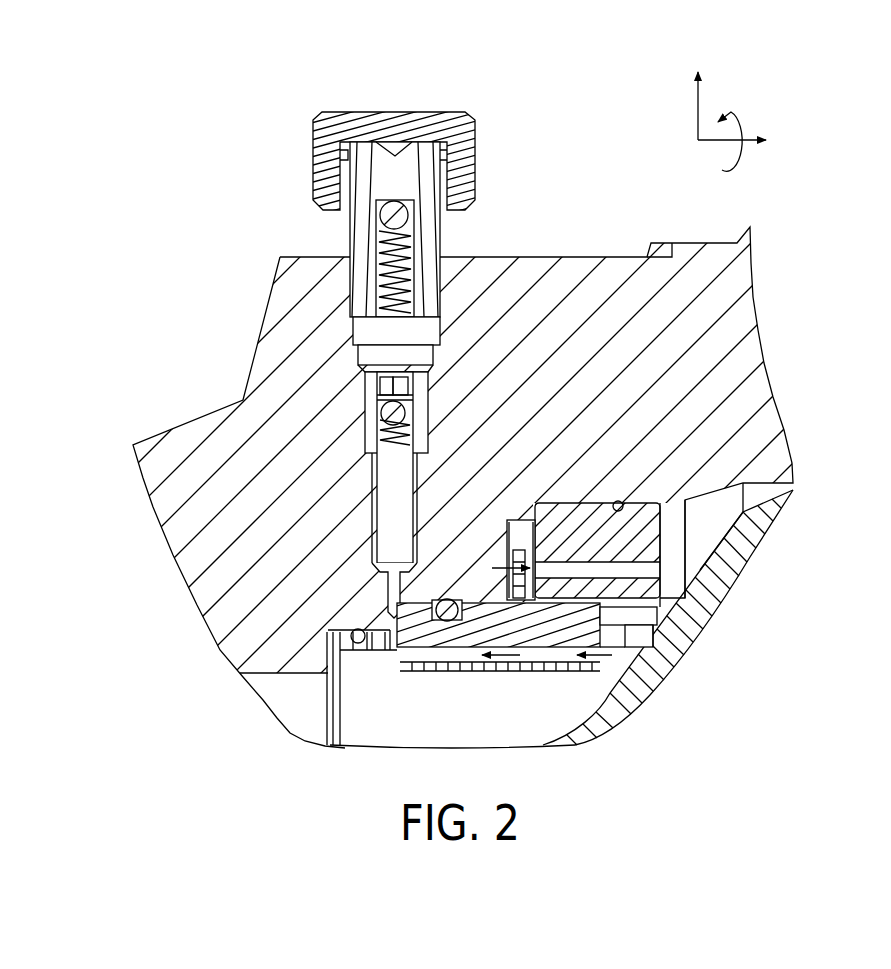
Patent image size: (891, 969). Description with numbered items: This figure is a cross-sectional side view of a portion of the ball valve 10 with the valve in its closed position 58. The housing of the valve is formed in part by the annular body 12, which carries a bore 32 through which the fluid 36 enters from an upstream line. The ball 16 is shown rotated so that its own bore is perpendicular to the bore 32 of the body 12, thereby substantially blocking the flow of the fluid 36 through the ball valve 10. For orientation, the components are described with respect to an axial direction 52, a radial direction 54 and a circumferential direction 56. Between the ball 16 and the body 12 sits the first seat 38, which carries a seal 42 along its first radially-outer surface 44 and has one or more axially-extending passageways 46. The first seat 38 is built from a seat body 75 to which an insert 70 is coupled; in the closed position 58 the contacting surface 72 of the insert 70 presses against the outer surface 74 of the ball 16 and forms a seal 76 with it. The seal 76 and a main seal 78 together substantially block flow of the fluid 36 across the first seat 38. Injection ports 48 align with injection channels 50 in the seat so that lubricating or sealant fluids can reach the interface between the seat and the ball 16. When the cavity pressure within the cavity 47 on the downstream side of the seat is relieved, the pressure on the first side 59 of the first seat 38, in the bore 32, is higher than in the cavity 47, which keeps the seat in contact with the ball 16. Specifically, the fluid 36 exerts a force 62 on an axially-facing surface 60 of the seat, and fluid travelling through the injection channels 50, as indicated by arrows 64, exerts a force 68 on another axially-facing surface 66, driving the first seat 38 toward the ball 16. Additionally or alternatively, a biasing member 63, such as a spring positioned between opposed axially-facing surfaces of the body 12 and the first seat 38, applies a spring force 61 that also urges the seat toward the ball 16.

The ball valve 10 is at (800, 98).
The body 12 is at (570, 272).
The ball 16 is at (757, 538).
The bore 32 is at (300, 675).
The fluid 36 is at (230, 723).
The first seat 38 is at (655, 520).
The seal 42 is at (628, 500).
The first radially-outer surface 44 is at (568, 505).
The passageways 46 is at (623, 567).
The cavity 47 is at (781, 497).
The injection ports 48 is at (382, 120).
The injection channels 50 is at (530, 662).
The axial axis or direction 52 is at (722, 142).
The radial axis or direction 54 is at (698, 112).
The circumferential axis or direction 56 is at (743, 160).
The closed position 58 is at (618, 220).
The first side 59 is at (290, 735).
The axially-facing surface 60 is at (330, 653).
The spring force 61 is at (505, 578).
The force 62 is at (328, 652).
The biasing member 63 is at (524, 555).
The arrows 64 is at (505, 657).
The axially-facing surface 66 is at (392, 650).
The force 68 is at (390, 620).
The insert 70 is at (640, 610).
The contacting surface 72 is at (650, 630).
The outer surface 74 is at (700, 595).
The body 75 is at (650, 592).
The seal 76 is at (655, 648).
The main seal 78 is at (447, 602).